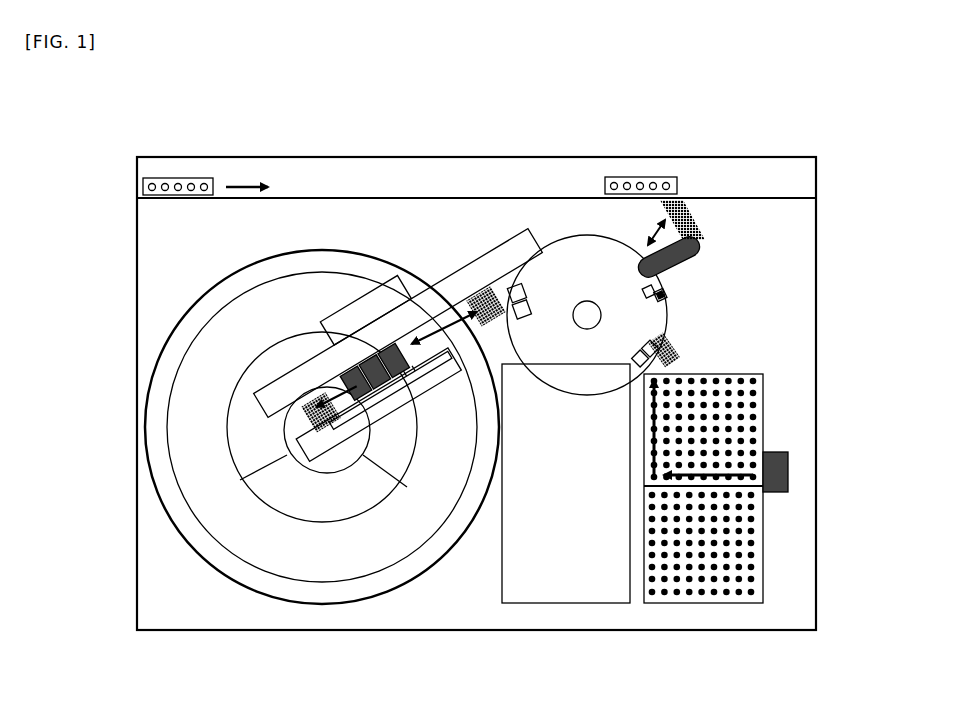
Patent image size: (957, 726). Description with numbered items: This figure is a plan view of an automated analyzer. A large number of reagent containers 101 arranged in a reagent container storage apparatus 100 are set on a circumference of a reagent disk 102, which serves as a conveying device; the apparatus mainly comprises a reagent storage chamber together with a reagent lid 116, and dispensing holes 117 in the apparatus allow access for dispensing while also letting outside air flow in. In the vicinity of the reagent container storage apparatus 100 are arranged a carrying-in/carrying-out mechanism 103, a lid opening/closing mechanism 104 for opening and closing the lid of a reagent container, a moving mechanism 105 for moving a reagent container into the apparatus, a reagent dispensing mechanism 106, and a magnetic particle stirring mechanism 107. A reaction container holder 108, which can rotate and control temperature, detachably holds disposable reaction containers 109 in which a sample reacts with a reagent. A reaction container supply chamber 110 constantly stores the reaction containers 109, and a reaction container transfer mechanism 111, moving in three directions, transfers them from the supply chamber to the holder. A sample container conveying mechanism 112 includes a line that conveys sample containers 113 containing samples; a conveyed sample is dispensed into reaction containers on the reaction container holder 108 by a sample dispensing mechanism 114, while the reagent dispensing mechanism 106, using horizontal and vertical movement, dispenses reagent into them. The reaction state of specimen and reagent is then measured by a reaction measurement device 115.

The reagent container storage apparatus 100 is at (198, 555).
The reagent containers 101 is at (440, 470).
The reagent disk 102 is at (425, 527).
The carrying-in/carrying-out mechanism 103 is at (293, 498).
The lid opening/closing mechanism 104 is at (368, 312).
The moving mechanism 105 is at (310, 443).
The reagent dispensing mechanism 106 is at (398, 347).
The magnetic particle stirring mechanism 107 is at (355, 380).
The reaction container holder 108 is at (583, 250).
The reaction container 109 is at (668, 296).
The reaction container supply chamber 110 is at (715, 593).
The reaction container transfer mechanism 111 is at (790, 468).
The sample container conveying mechanism 112 is at (234, 166).
The sample containers 113 is at (143, 186).
The sample dispensing mechanism 114 is at (702, 230).
The reaction measurement device 115 is at (572, 558).
The reagent lid 116 is at (310, 498).
The dispensing holes 117 is at (347, 472).